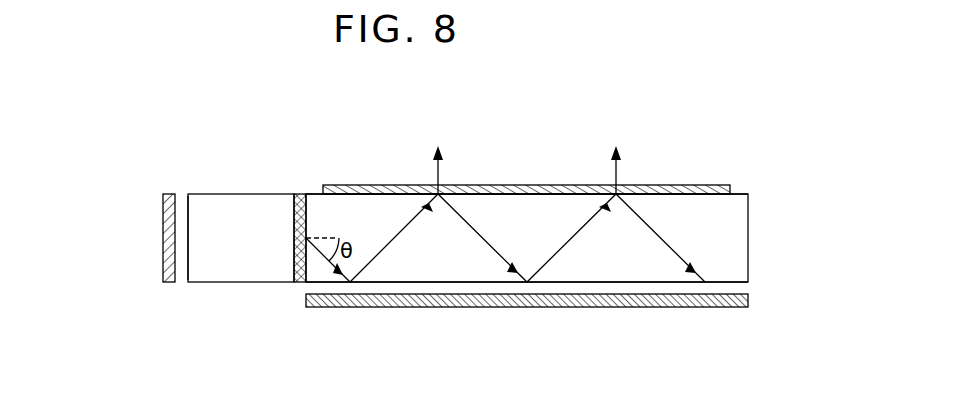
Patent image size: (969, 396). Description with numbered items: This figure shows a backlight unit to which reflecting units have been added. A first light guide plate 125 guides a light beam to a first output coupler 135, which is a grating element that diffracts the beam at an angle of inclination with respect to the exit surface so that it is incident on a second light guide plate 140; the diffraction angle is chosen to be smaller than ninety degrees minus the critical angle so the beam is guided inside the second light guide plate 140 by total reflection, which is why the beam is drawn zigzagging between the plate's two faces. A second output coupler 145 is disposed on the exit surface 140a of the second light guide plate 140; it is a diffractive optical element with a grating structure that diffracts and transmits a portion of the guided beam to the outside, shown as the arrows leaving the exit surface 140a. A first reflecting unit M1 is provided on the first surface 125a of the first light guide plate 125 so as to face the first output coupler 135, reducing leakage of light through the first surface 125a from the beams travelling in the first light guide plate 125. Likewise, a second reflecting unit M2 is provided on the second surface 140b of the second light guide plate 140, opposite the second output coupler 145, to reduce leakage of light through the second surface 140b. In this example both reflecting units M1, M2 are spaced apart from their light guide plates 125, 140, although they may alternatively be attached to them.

The first reflecting unit M1 is at (172, 192).
The first light guide plate 125 is at (235, 203).
The first surface 125a is at (188, 245).
The first output coupler 135 is at (300, 192).
The second light guide plate 140 is at (742, 238).
The exit surface 140a is at (743, 192).
The second surface 140b is at (727, 283).
The second output coupler 145 is at (727, 192).
The second reflecting unit M2 is at (527, 307).